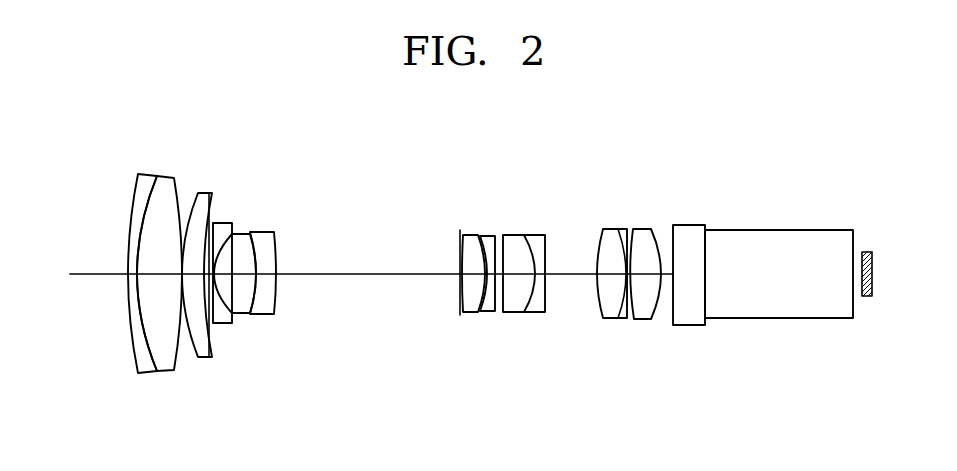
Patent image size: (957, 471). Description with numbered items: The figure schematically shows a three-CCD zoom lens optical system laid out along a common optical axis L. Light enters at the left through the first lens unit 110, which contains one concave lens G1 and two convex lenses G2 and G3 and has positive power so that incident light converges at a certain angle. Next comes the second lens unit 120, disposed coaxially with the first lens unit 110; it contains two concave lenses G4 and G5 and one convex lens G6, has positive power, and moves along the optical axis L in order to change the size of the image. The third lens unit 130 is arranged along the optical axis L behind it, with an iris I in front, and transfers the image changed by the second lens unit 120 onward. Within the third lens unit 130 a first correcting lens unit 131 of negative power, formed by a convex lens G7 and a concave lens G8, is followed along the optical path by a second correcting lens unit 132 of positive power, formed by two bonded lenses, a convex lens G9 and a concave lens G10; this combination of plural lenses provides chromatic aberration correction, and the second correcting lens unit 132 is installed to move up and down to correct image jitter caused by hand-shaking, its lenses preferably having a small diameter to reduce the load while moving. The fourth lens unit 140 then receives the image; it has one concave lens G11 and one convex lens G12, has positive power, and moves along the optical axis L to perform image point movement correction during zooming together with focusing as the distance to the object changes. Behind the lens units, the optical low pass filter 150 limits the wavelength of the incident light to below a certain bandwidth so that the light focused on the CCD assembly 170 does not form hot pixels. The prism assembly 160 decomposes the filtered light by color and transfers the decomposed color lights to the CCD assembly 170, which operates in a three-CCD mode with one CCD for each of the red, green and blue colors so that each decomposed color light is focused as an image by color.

The optical axis L is at (95, 275).
The iris I is at (460, 314).
The concave lens G1 is at (139, 173).
The convex lens G2 is at (164, 178).
The convex lens G3 is at (203, 193).
The concave lens G4 is at (226, 223).
The concave lens G5 is at (248, 233).
The convex lens G6 is at (270, 231).
The convex lens G7 is at (466, 234).
The concave lens G8 is at (489, 237).
The convex lens G9 is at (518, 238).
The concave lens G10 is at (538, 238).
The concave lens G11 is at (612, 234).
The convex lens G12 is at (643, 236).
The first lens unit 110 is at (158, 275).
The second lens unit 120 is at (265, 299).
The third lens unit 130 is at (502, 286).
The first correcting lens unit 131 is at (468, 268).
The second correcting lens unit 132 is at (534, 269).
The fourth lens unit 140 is at (626, 270).
The optical low pass filter 150 is at (686, 326).
The prism assembly 160 is at (766, 313).
The CCD assembly 170 is at (862, 297).